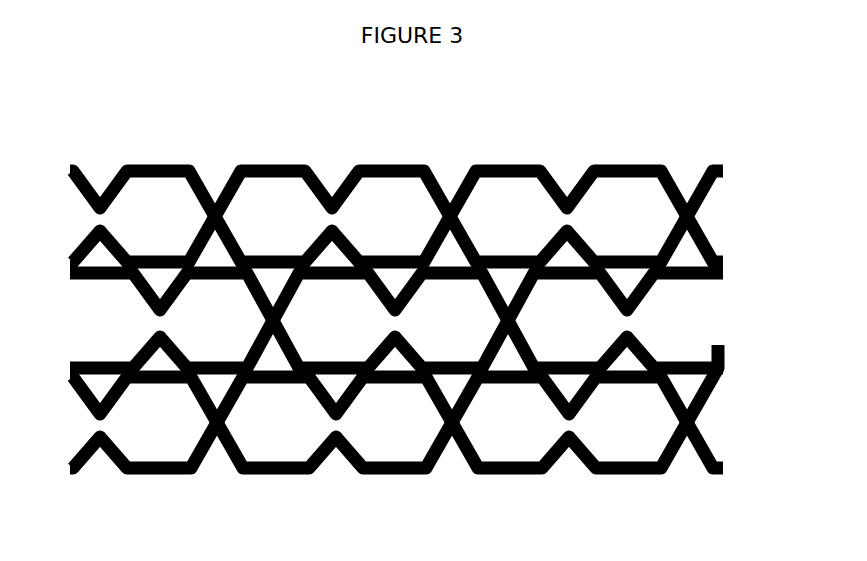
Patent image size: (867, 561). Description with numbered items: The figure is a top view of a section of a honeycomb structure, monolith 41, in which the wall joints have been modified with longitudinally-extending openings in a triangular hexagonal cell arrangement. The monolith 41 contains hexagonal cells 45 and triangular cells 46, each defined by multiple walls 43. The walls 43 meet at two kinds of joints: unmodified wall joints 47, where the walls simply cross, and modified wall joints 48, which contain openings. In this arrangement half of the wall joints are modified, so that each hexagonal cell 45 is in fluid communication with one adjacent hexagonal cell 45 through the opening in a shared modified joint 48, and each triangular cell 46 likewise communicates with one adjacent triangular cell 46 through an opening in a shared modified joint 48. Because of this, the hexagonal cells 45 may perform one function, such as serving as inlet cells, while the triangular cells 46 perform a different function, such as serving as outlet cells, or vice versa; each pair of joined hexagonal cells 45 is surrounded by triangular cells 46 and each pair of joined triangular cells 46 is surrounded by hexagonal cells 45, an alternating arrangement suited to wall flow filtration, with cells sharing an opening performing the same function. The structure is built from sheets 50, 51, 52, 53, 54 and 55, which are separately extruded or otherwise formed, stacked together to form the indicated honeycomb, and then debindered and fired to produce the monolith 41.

The monolith 41 is at (190, 95).
The walls 43 is at (395, 183).
The hexagonal cells 45 is at (395, 323).
The triangular cells 46 is at (267, 357).
The unmodified wall joints 47 is at (218, 385).
The modified wall joints 48 is at (332, 198).
The sheet 50 is at (70, 176).
The sheet 51 is at (70, 258).
The sheet 52 is at (70, 276).
The sheet 53 is at (70, 370).
The sheet 54 is at (70, 381).
The sheet 55 is at (70, 466).